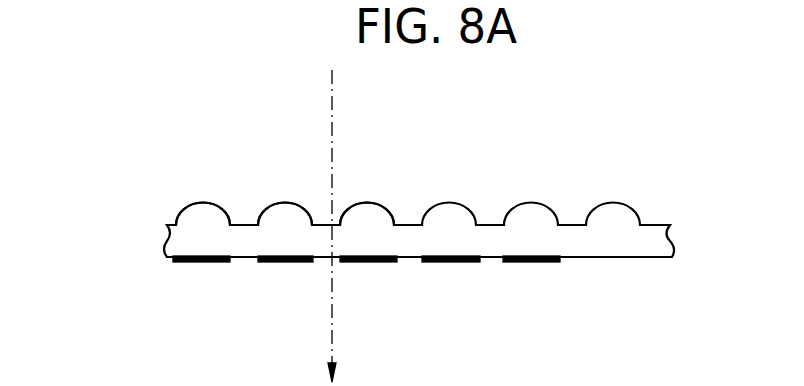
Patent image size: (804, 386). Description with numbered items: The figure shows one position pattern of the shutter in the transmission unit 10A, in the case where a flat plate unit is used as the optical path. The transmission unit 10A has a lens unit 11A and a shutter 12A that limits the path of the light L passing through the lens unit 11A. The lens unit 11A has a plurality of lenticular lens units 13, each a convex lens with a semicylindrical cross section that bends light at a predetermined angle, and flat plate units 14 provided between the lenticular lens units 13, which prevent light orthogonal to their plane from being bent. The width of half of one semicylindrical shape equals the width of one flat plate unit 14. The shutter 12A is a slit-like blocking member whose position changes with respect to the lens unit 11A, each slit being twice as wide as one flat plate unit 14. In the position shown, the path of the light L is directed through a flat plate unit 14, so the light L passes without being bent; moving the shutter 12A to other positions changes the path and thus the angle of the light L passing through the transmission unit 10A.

The transmission unit 10A is at (145, 116).
The lens unit 11A is at (670, 237).
The shutter 12A is at (522, 263).
The lenticular lens unit 13 is at (368, 203).
The flat plate unit 14 is at (573, 225).
The light L is at (330, 320).